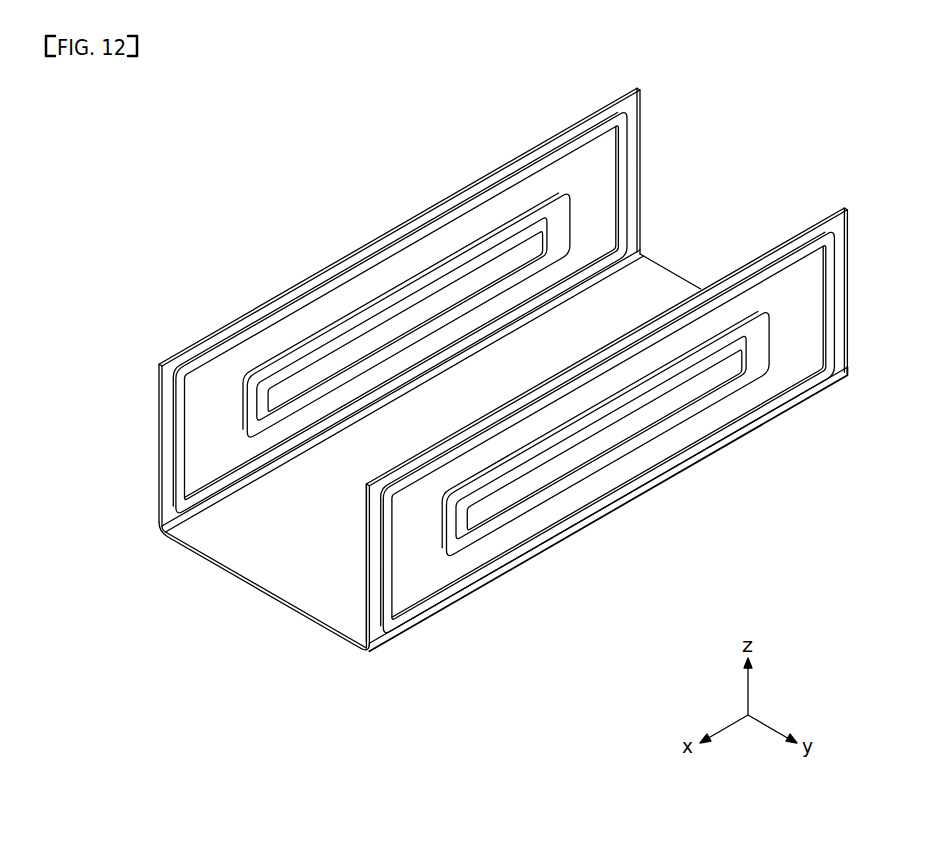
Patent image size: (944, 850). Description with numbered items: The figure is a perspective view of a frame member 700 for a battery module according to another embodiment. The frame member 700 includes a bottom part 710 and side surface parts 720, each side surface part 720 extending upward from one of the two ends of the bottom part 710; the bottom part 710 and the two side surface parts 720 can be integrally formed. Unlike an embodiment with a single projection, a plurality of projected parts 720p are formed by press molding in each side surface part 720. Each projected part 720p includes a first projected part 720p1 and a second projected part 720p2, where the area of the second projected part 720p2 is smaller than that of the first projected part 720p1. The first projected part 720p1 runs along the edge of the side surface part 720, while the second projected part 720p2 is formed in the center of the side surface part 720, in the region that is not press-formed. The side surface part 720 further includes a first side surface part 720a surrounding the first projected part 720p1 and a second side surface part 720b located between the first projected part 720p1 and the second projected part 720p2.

The frame member 700 is at (503, 393).
The bottom part 710 is at (657, 297).
The side surface part 720 is at (515, 460).
The first side surface part 720a is at (373, 597).
The second side surface part 720b is at (458, 513).
The projected part 720p is at (608, 461).
The first projected part 720p1 is at (418, 568).
The second projected part 720p2 is at (560, 455).